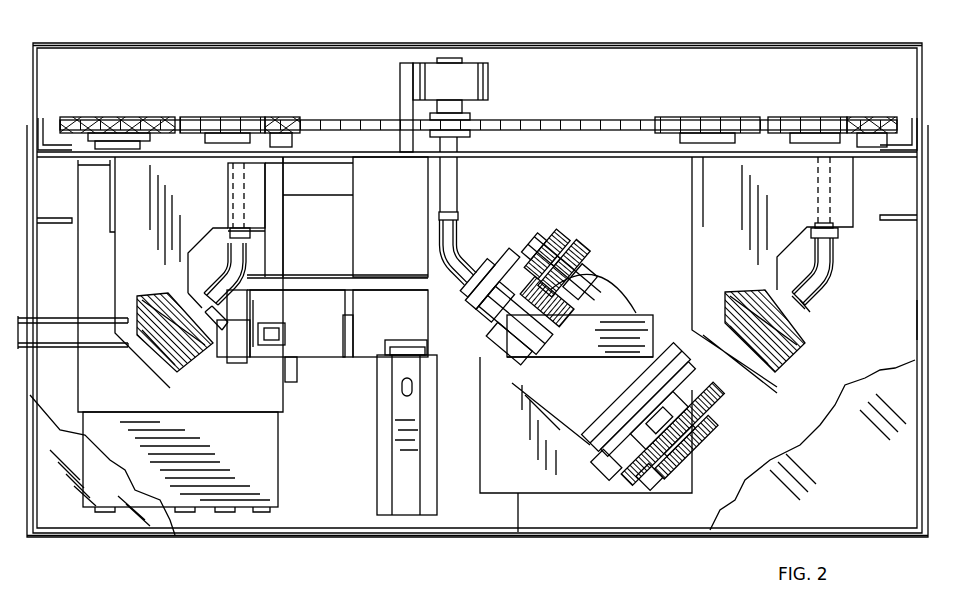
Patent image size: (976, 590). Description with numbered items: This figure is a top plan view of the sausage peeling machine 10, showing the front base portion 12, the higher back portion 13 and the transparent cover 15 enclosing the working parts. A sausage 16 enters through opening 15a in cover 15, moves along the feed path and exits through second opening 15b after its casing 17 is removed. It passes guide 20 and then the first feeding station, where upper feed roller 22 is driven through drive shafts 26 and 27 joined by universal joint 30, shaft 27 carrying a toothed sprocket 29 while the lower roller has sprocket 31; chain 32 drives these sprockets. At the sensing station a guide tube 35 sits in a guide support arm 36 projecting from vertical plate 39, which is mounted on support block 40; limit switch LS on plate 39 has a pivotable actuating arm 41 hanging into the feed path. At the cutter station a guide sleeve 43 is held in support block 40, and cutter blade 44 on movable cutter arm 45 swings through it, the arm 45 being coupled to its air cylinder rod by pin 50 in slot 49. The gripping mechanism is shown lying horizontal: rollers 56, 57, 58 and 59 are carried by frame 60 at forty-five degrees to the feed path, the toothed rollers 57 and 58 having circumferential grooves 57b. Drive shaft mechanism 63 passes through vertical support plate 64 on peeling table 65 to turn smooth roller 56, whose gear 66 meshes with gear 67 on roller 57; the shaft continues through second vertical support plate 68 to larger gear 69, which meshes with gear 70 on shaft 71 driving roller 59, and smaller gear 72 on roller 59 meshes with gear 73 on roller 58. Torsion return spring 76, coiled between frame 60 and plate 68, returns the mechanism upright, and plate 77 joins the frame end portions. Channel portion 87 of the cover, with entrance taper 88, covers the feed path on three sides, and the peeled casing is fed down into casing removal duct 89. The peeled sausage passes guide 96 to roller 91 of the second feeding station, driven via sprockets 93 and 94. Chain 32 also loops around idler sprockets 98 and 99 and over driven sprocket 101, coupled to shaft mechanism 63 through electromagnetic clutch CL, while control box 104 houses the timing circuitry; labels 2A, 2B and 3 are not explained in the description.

The sausage peeling machine 10 is at (641, 36).
The front base portion 12 is at (240, 535).
The back portion 13 is at (206, 43).
The transparent cover 15 is at (58, 518).
The opening 15a is at (30, 352).
The second opening 15b is at (917, 322).
The sausage 16 is at (57, 285).
The casing 17 is at (22, 318).
The guide 20 is at (142, 373).
The feed roller 22 is at (200, 388).
The drive shaft 26 is at (188, 277).
The drive shaft 27 is at (267, 231).
The toothed sprocket 29 is at (199, 118).
The universal joint 30 is at (246, 257).
The sprocket 31 is at (113, 118).
The chain 32 is at (361, 118).
The guide tube 35 is at (296, 385).
The guide support arm 36 is at (240, 365).
The vertical plate 39 is at (377, 283).
The support block 40 is at (398, 207).
The pivotable actuating arm 41 is at (285, 338).
The guide sleeve 43 is at (285, 347).
The cutter blade 44 is at (376, 344).
The movable cutter arm 45 is at (403, 498).
The slot 49 is at (402, 396).
The pin 50 is at (400, 383).
The roller 56 is at (475, 318).
The roller 57 is at (497, 348).
The circumferential grooves 57b is at (580, 342).
The roller 58 is at (565, 268).
The roller 59 is at (582, 285).
The frame 60 is at (483, 300).
The drive shaft mechanism 63 is at (487, 262).
The vertical support plate 64 is at (498, 258).
The peeling table 65 is at (518, 532).
The gear 66 is at (585, 412).
The gear 67 is at (592, 382).
The second vertical support plate 68 is at (600, 470).
The larger gear 69 is at (640, 475).
The gear 70 is at (685, 430).
The shaft 71 is at (700, 375).
The smaller gear 72 is at (560, 245).
The gear 73 is at (532, 250).
The torsion return spring 76 is at (680, 455).
The plate 77 is at (482, 358).
The channel portion 87 is at (648, 318).
The taper 88 is at (590, 408).
The casing removal duct 89 is at (610, 277).
The roller 91 is at (783, 353).
The sprocket 93 is at (802, 118).
The sprocket 94 is at (677, 118).
The guide 96 is at (763, 388).
The idler sprocket 98 is at (283, 118).
The idler sprocket 99 is at (873, 118).
The driven sprocket 101 is at (473, 118).
The control box 104 is at (262, 470).
The left module 2A is at (157, 250).
The panel 2B is at (297, 160).
The section line 3 is at (580, 445).
The electromagnetic clutch CL is at (490, 62).
The limit switch LS is at (310, 313).